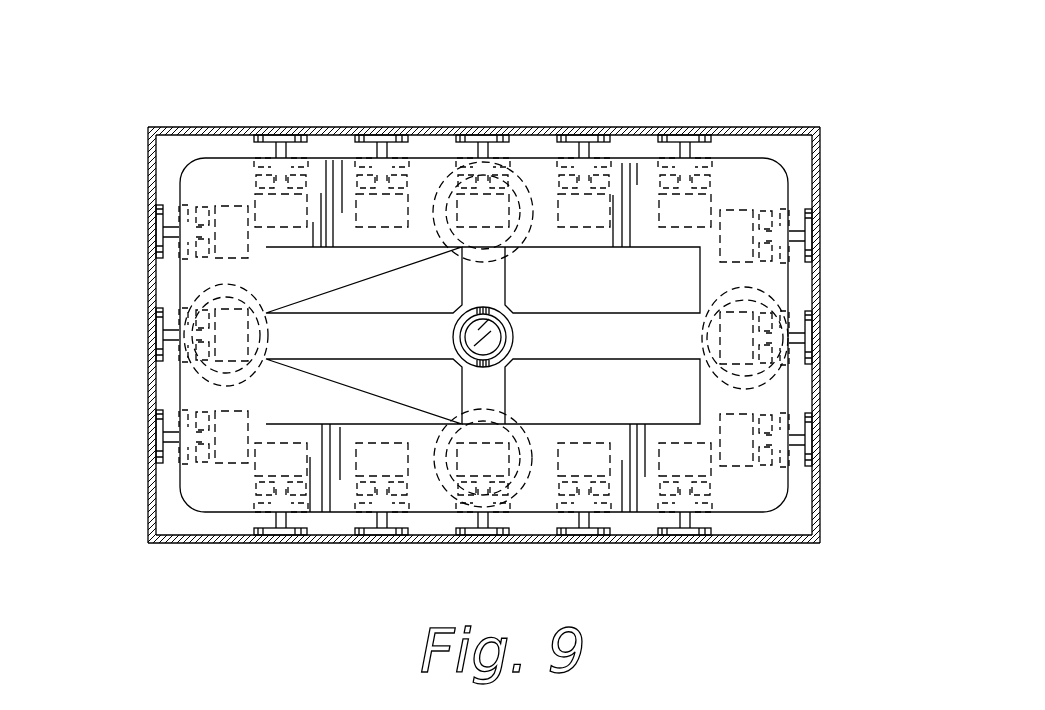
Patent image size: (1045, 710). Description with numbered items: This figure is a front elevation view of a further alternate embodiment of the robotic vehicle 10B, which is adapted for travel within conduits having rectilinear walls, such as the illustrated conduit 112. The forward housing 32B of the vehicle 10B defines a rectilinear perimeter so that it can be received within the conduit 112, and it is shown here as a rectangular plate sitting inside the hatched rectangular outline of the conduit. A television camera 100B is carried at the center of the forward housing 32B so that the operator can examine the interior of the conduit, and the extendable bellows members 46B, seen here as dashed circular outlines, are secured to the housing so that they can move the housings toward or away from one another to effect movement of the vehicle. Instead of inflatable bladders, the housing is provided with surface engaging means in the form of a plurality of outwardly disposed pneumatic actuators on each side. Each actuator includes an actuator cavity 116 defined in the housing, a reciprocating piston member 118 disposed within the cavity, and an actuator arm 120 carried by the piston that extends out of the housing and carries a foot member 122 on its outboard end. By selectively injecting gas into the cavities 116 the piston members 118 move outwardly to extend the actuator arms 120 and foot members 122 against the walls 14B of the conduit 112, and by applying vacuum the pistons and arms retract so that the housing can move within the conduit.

The robotic vehicle 10B is at (736, 148).
The walls of the conduit 14B is at (237, 135).
The forward housing 32B is at (338, 315).
The bellows members 46B is at (510, 254).
The television camera 100B is at (496, 342).
The conduit 112 is at (150, 127).
The actuator cavity 116 is at (443, 208).
The piston member 118 is at (653, 484).
The actuator arm 120 is at (172, 328).
The foot member 122 is at (360, 135).